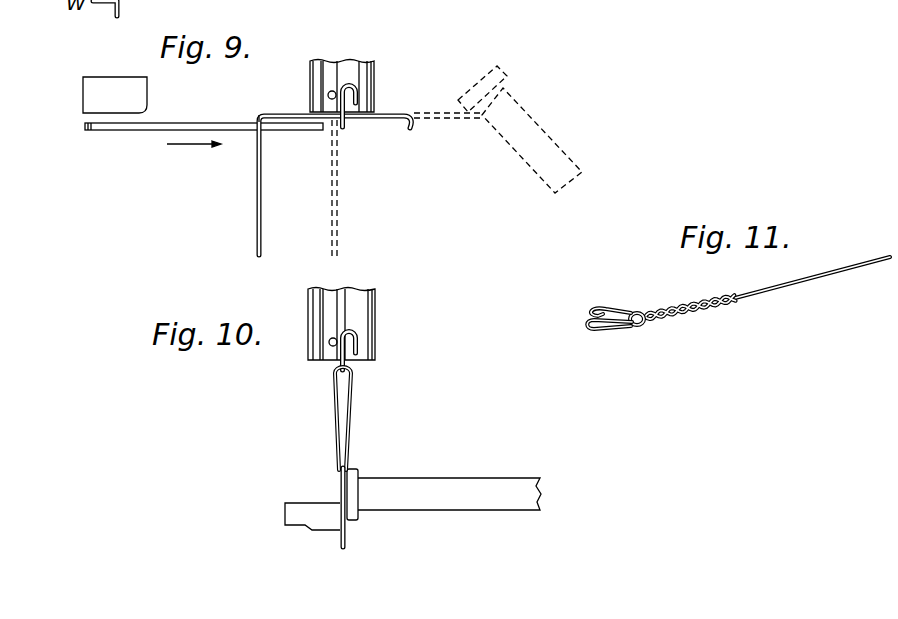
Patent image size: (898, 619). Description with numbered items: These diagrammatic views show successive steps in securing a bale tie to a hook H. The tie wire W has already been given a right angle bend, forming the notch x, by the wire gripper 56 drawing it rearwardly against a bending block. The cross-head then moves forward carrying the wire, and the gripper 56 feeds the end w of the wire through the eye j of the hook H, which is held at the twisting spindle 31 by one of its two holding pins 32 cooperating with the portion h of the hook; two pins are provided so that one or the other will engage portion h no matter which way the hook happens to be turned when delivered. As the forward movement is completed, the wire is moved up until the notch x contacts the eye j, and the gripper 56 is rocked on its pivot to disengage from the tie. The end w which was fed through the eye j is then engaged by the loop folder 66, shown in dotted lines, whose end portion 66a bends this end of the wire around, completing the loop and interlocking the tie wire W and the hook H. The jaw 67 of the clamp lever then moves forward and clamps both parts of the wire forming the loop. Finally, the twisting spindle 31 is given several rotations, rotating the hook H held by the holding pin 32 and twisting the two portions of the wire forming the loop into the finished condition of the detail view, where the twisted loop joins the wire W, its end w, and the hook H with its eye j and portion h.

In FIG. 9, the twisting spindle 31 is at (377, 64).
In FIG. 10, the twisting spindle 31 is at (378, 293).
In FIG. 10, the holding pin 32 is at (355, 337).
In FIG. 9, the wire gripper 56 is at (291, 131).
In FIG. 9, the loop folder 66 is at (532, 115).
In FIG. 10, the loop folder 66 is at (458, 488).
In FIG. 9, the loop folder end portion 66a is at (497, 68).
In FIG. 10, the loop folder end portion 66a is at (360, 476).
In FIG. 10, the jaw 67 is at (301, 504).
In FIG. 9, the tie wire W is at (257, 209).
In FIG. 11, the tie wire W is at (882, 256).
In FIG. 9, the end of tie wire w is at (447, 132).
In FIG. 10, the end of tie wire w is at (352, 513).
In FIG. 11, the end of tie wire w is at (740, 298).
In FIG. 9, the portion of hook h is at (362, 93).
In FIG. 10, the portion of hook h is at (376, 353).
In FIG. 11, the portion of hook h is at (591, 308).
In FIG. 9, the eye of hook j is at (343, 126).
In FIG. 11, the eye of hook j is at (634, 325).
In FIG. 11, the hook H is at (617, 331).
In FIG. 9, the notch of tie wire x is at (262, 114).